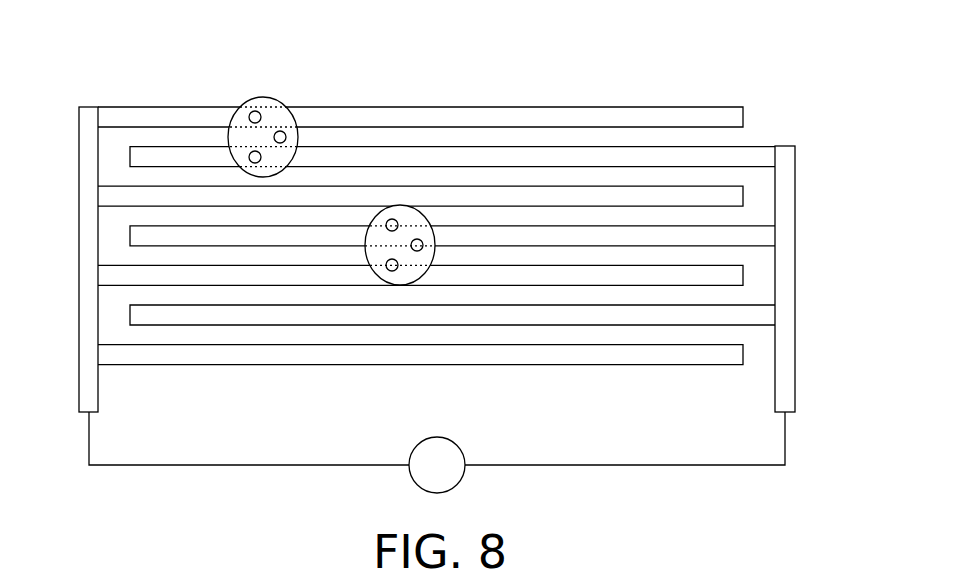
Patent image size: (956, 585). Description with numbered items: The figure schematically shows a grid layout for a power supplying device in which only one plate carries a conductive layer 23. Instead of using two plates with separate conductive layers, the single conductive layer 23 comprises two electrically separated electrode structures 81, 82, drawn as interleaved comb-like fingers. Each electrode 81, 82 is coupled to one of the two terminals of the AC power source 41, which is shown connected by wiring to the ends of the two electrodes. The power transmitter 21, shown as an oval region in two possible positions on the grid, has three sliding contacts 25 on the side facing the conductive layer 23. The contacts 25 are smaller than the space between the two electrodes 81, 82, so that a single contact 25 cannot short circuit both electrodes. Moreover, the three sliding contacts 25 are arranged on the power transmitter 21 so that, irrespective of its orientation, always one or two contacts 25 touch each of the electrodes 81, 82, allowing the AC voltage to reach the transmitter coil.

The power transmitter 21 is at (298, 137).
The conductive layer 23 is at (723, 107).
The sliding contacts 25 is at (256, 111).
The AC power source 41 is at (461, 448).
The first electrode structure 81 is at (480, 107).
The second electrode structure 82 is at (775, 393).